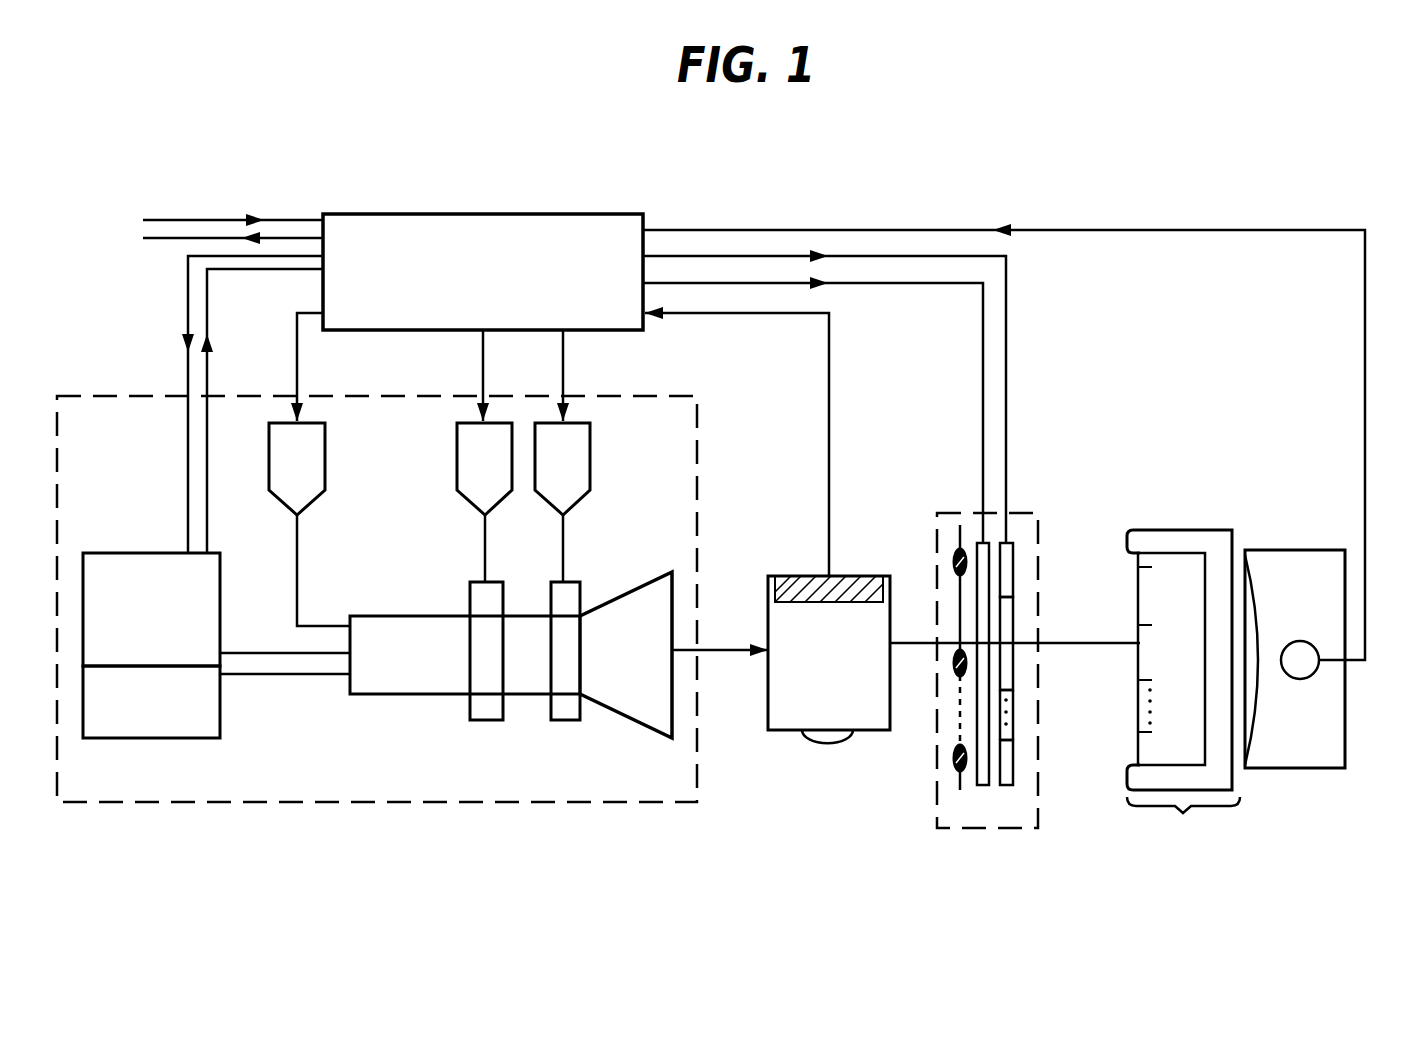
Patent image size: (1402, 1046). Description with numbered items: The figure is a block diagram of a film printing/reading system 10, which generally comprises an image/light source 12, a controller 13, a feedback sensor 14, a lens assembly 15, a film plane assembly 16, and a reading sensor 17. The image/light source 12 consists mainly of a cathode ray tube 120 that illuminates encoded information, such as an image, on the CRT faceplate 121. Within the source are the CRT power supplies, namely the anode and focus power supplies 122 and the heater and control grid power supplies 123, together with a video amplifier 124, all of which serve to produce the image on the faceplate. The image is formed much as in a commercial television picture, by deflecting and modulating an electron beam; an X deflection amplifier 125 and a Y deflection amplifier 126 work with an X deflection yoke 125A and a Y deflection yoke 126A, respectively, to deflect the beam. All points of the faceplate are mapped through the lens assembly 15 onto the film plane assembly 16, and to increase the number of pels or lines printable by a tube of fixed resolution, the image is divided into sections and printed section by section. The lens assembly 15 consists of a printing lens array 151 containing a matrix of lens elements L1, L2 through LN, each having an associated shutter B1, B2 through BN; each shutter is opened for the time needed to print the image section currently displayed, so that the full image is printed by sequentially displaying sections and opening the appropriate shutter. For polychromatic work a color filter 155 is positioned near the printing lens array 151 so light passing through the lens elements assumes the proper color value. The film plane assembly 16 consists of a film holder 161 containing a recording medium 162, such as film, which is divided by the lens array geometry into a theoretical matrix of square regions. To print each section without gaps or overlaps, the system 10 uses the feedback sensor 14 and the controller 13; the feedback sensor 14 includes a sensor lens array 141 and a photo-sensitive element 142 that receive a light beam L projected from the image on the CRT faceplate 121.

The film printing/reading system 10 is at (590, 172).
The image/light source 12 is at (298, 778).
The controller 13 is at (473, 289).
The feedback sensor 14 is at (817, 679).
The lens assembly 15 is at (940, 830).
The film plane assembly 16 is at (1149, 657).
The reading sensor 17 is at (1290, 553).
The cathode ray tube 120 is at (400, 632).
The CRT faceplate 121 is at (676, 570).
The anode and focus power supplies 122 is at (128, 628).
The heater and control grid power supplies 123 is at (128, 720).
The video amplifier 124 is at (276, 481).
The X deflection amplifier 125 is at (464, 481).
The Y deflection amplifier 126 is at (542, 481).
The X deflection yoke 125A is at (482, 666).
The Y deflection yoke 126A is at (563, 675).
The sensor lens array 141 is at (840, 740).
The photo-sensitive element 142 is at (843, 603).
The printing lens array 151 is at (958, 780).
The color filter 155 is at (980, 540).
The film holder 161 is at (1158, 530).
The recording medium 162 is at (1172, 690).
The light beam L is at (718, 634).
The first lens element L1 is at (952, 562).
The second lens element L2 is at (952, 664).
The Nth lens element LN is at (952, 759).
The first shutter B1 is at (1014, 564).
The second shutter B2 is at (1014, 668).
The Nth shutter BN is at (1014, 768).